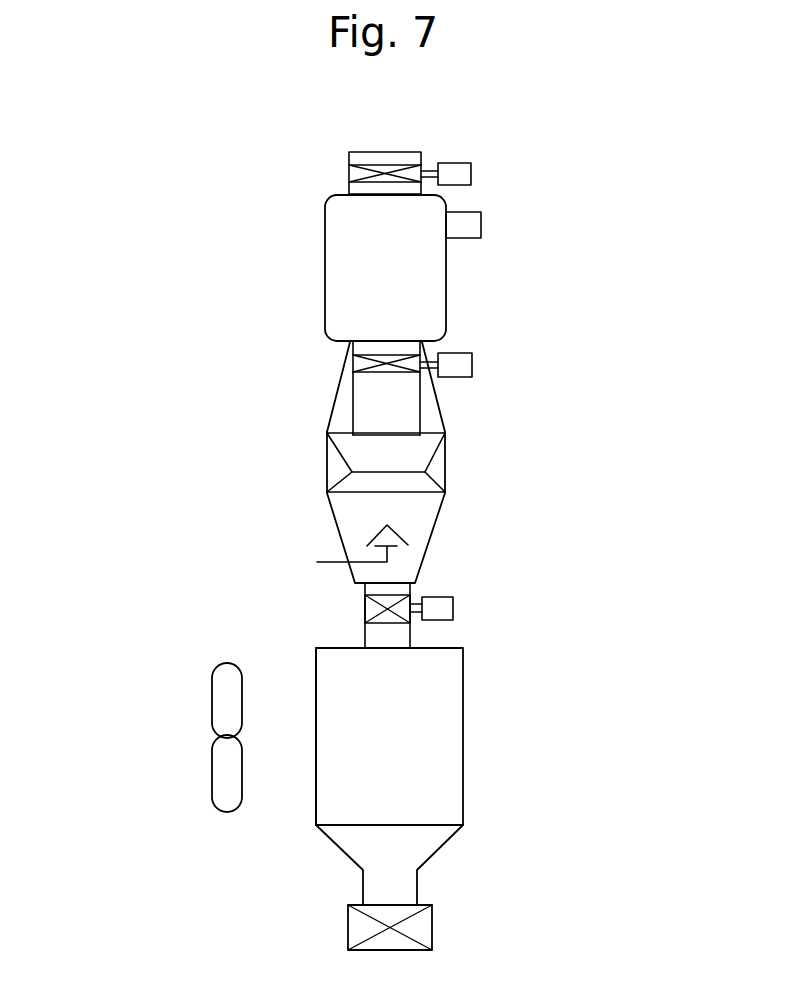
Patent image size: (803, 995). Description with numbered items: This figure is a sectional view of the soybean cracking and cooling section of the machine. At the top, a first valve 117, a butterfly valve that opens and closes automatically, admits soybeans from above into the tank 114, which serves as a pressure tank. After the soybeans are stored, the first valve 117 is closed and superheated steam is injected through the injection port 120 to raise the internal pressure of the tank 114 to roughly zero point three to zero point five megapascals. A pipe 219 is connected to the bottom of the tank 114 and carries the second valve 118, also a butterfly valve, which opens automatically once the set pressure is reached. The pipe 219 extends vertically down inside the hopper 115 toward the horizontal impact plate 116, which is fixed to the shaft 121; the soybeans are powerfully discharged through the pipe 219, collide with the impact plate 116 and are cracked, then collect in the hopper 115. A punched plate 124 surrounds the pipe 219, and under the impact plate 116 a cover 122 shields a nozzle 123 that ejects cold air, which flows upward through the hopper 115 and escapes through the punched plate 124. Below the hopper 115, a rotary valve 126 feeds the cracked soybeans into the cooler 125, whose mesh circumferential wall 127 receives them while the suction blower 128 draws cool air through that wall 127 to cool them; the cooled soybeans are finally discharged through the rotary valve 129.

The tank 114 is at (335, 278).
The hopper 115 is at (327, 455).
The impact plate 116 is at (428, 470).
The first valve 117 is at (471, 172).
The second valve 118 is at (472, 365).
The injection port 120 is at (481, 222).
The shaft 121 is at (343, 481).
The cover 122 is at (403, 535).
The nozzle 123 is at (370, 548).
The punched plate 124 is at (337, 388).
The cooler 125 is at (465, 717).
The rotary valve 126 is at (453, 607).
The circumferential wall 127 is at (316, 688).
The suction blower 128 is at (212, 775).
The rotary valve 129 is at (432, 927).
The pipe 219 is at (427, 407).